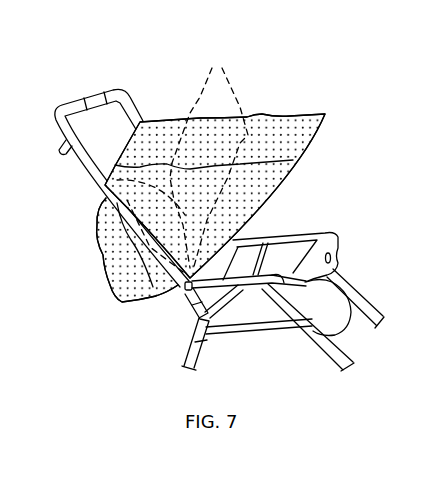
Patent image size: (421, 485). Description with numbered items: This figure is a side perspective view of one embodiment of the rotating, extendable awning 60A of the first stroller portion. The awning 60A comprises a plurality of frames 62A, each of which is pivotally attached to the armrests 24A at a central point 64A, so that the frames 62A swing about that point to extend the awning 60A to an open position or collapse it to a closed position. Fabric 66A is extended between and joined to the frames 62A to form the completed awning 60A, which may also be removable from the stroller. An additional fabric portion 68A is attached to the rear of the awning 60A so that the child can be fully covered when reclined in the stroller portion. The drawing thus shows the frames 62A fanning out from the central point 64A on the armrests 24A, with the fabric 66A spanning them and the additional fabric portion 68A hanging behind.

The armrest 24A is at (253, 325).
The extendable awning 60A is at (240, 158).
The frame 62A is at (182, 158).
The central point 64A is at (183, 292).
The fabric 66A is at (275, 130).
The additional fabric portion 68A is at (119, 298).